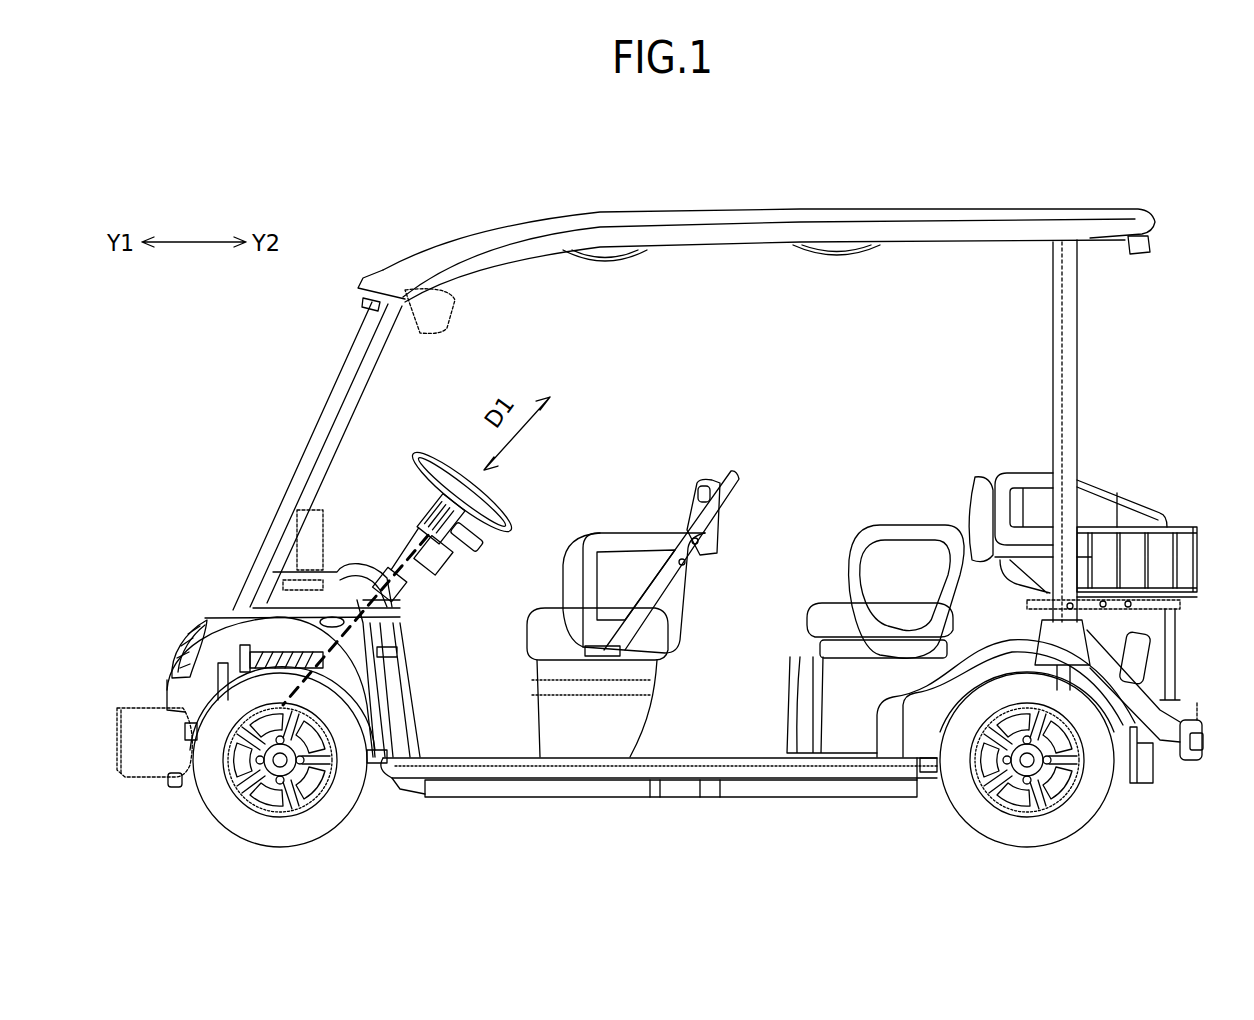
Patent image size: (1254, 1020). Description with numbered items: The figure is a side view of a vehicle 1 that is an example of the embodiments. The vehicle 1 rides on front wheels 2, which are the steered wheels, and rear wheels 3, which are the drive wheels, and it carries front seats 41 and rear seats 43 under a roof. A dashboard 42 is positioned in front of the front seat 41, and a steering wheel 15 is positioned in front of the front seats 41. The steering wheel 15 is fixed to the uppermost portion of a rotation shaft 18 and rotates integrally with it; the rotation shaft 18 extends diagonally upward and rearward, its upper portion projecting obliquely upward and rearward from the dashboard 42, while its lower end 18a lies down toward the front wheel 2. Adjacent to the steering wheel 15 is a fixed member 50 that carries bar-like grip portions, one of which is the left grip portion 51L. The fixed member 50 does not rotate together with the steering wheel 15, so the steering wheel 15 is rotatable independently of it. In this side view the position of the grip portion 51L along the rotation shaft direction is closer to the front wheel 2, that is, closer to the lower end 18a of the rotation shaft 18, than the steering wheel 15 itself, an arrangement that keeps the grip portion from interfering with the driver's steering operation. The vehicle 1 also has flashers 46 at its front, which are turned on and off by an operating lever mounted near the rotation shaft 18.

The vehicle 1 is at (862, 158).
The front wheel 2 is at (264, 822).
The rear wheel 3 is at (1032, 830).
The steering wheel 15 is at (422, 452).
The rotation shaft 18 is at (410, 563).
The lower end of the rotation shaft 18a is at (283, 706).
The front seat 41 is at (620, 586).
The dashboard 42 is at (357, 572).
The rear seat 43 is at (905, 582).
The flasher 46 is at (175, 645).
The fixed member 50 is at (440, 565).
The left grip portion 51L is at (488, 545).